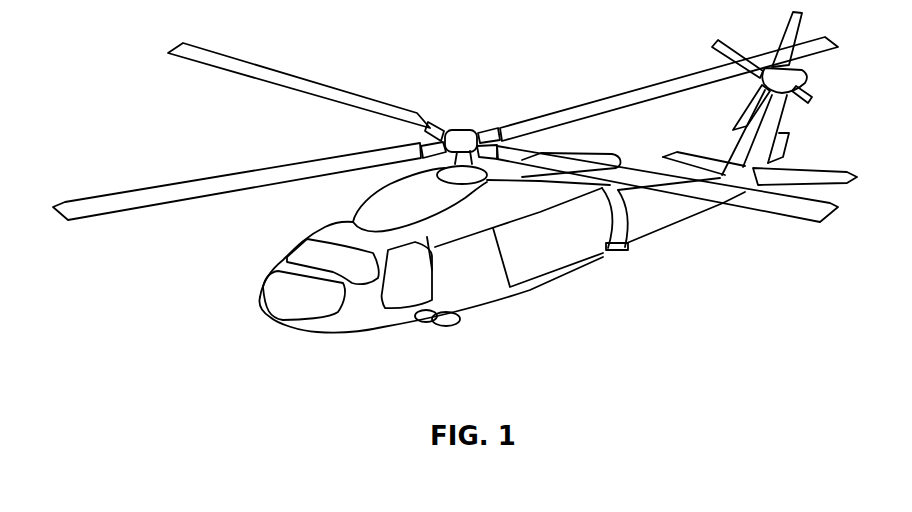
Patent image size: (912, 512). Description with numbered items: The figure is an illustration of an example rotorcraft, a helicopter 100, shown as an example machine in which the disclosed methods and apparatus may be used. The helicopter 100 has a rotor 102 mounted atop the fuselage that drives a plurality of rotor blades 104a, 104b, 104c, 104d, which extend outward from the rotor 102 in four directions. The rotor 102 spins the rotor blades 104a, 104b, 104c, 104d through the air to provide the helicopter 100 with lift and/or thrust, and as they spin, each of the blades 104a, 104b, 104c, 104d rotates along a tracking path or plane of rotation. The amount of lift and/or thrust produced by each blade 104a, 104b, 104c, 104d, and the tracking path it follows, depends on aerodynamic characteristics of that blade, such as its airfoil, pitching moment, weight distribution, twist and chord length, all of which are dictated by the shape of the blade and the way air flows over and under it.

The helicopter 100 is at (283, 321).
The rotor 102 is at (463, 130).
The rotor blade 104a is at (220, 39).
The rotor blade 104b is at (83, 191).
The rotor blade 104c is at (806, 221).
The rotor blade 104d is at (580, 106).